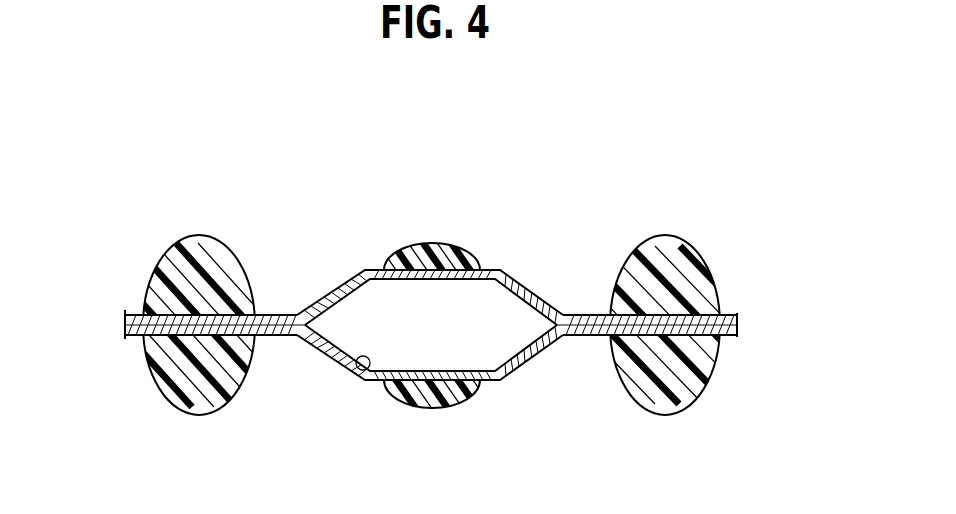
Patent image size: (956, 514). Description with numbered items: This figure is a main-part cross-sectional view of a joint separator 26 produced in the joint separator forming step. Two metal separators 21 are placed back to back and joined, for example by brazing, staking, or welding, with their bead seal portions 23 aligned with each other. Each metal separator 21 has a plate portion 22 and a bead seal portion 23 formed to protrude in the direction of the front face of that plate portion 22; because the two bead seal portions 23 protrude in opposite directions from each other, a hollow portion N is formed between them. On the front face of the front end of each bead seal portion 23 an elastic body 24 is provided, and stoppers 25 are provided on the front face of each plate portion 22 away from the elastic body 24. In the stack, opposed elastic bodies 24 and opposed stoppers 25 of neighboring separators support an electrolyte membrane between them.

The metal separator 21 is at (492, 232).
The plate portion 22 is at (183, 318).
The bead seal portion 23 is at (327, 297).
The elastic body 24 is at (442, 250).
The stopper 25 is at (153, 305).
The joint separator 26 is at (580, 177).
The hollow portion N is at (358, 370).